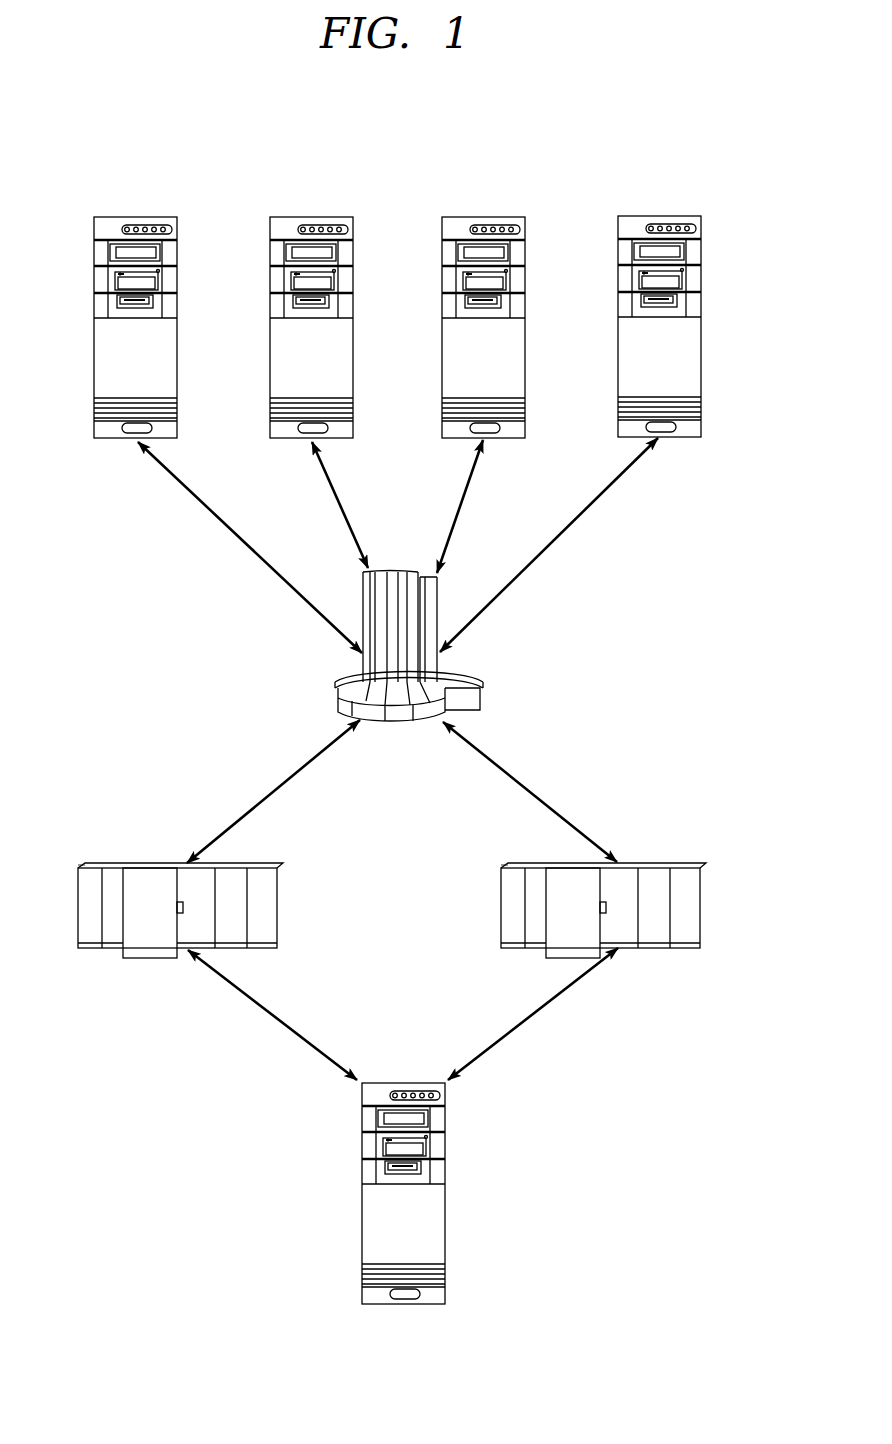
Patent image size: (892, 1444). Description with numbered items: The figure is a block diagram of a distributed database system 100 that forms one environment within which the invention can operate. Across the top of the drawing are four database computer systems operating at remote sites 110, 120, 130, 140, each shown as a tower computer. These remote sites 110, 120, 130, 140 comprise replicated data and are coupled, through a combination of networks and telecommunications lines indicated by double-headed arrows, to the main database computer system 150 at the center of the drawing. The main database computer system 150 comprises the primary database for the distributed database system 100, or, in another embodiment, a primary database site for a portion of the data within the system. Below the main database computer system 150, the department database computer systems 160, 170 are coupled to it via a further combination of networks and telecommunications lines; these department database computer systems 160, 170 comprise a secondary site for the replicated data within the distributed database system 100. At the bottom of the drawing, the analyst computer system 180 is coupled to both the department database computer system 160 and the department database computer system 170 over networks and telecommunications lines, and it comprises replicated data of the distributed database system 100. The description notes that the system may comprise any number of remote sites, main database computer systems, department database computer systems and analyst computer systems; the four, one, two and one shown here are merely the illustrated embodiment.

The distributed database system 100 is at (678, 104).
The remote site 110 is at (96, 214).
The remote site 120 is at (273, 214).
The remote site 130 is at (446, 214).
The remote site 140 is at (622, 213).
The main database computer system 150 is at (402, 570).
The department database computer system 160 is at (90, 862).
The department database computer system 170 is at (512, 862).
The analyst computer system 180 is at (402, 1081).